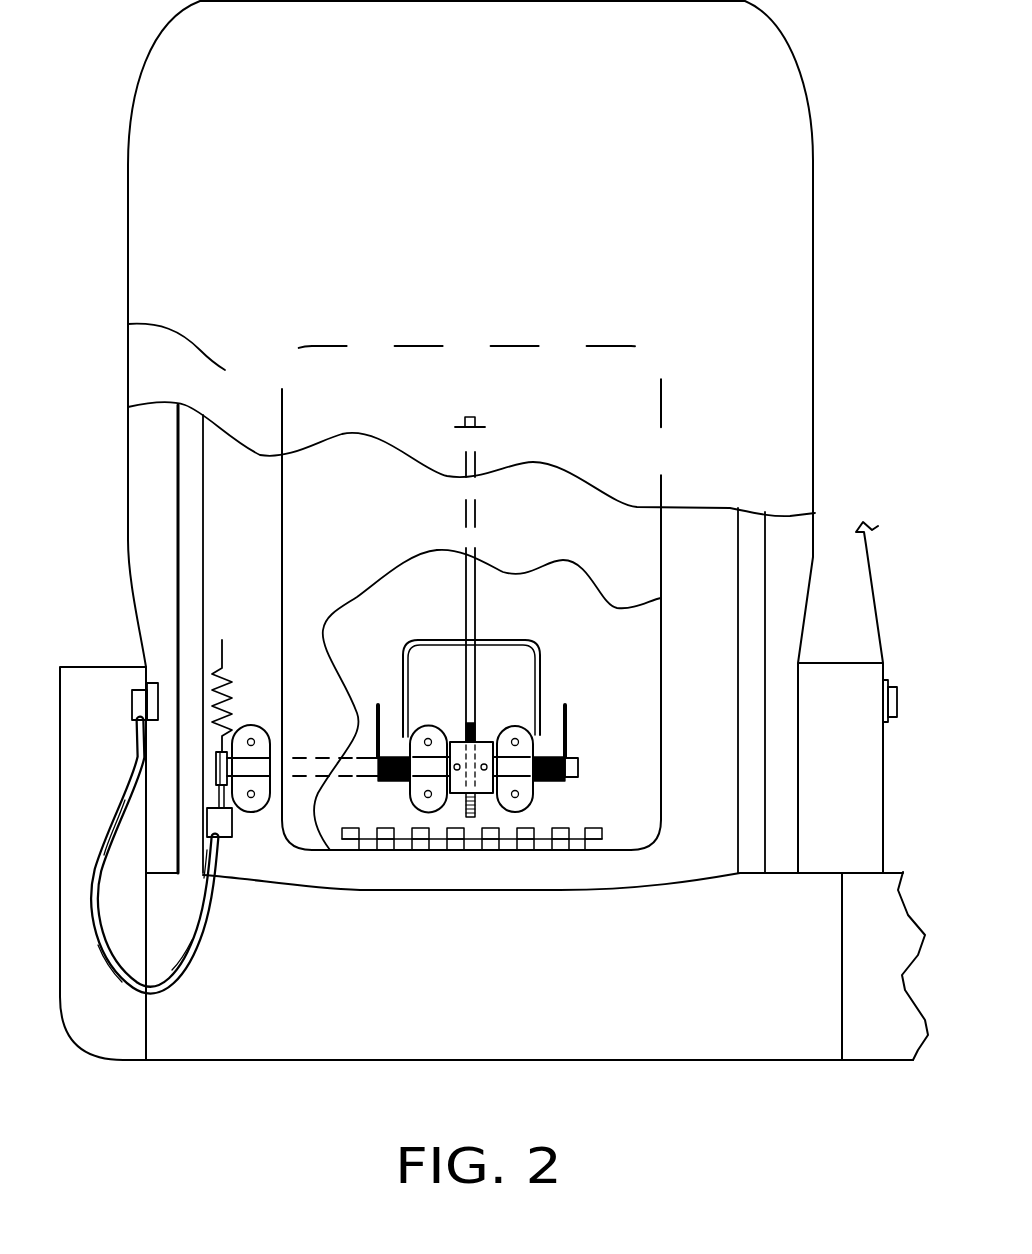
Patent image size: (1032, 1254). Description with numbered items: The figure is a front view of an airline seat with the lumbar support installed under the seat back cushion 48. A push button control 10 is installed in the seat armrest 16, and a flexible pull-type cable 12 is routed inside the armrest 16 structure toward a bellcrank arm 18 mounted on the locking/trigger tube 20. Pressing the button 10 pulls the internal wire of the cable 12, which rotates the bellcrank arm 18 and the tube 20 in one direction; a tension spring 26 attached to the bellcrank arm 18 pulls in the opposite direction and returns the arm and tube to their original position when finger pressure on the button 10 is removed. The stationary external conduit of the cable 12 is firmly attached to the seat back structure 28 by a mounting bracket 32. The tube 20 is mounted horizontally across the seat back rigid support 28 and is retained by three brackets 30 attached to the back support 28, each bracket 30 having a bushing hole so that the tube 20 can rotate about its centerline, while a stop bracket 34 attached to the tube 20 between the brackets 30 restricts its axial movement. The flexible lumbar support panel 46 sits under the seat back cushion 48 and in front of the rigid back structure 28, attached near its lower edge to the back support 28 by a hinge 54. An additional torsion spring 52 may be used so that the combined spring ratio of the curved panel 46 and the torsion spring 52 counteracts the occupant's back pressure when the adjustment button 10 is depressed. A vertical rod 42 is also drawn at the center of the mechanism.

The push button control 10 is at (160, 703).
The cable 12 is at (173, 992).
The seat armrest 16 is at (112, 667).
The bellcrank arm 18 is at (232, 730).
The locking/trigger tube 20 is at (578, 757).
The tension spring 26 is at (226, 664).
The seat back rigid support 28 is at (193, 580).
The brackets 30 is at (413, 725).
The mounting bracket 32 is at (233, 838).
The stop bracket 34 is at (483, 740).
The vertical adjusting rod 42 is at (476, 606).
The lumbar support panel 46 is at (312, 523).
The seat back cushion 48 is at (128, 324).
The torsion spring 52 is at (541, 668).
The hinge 54 is at (570, 828).